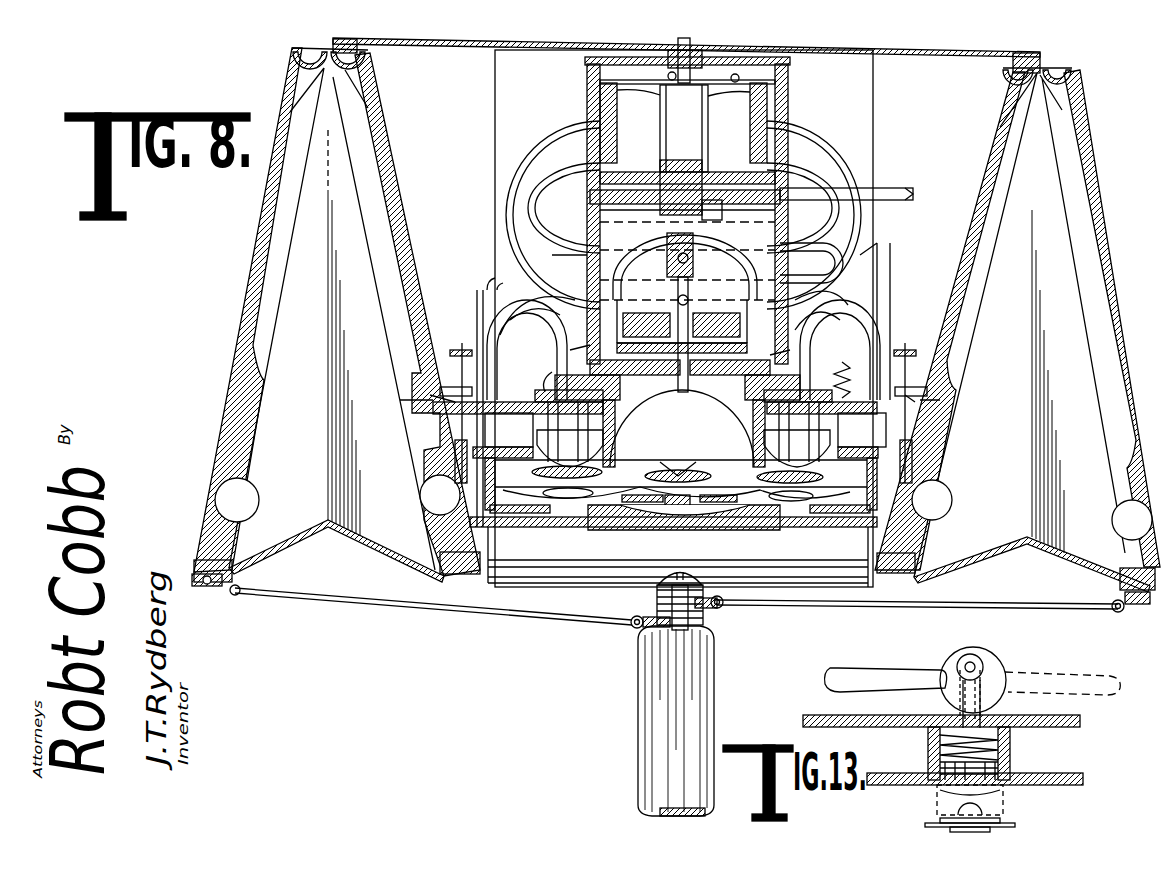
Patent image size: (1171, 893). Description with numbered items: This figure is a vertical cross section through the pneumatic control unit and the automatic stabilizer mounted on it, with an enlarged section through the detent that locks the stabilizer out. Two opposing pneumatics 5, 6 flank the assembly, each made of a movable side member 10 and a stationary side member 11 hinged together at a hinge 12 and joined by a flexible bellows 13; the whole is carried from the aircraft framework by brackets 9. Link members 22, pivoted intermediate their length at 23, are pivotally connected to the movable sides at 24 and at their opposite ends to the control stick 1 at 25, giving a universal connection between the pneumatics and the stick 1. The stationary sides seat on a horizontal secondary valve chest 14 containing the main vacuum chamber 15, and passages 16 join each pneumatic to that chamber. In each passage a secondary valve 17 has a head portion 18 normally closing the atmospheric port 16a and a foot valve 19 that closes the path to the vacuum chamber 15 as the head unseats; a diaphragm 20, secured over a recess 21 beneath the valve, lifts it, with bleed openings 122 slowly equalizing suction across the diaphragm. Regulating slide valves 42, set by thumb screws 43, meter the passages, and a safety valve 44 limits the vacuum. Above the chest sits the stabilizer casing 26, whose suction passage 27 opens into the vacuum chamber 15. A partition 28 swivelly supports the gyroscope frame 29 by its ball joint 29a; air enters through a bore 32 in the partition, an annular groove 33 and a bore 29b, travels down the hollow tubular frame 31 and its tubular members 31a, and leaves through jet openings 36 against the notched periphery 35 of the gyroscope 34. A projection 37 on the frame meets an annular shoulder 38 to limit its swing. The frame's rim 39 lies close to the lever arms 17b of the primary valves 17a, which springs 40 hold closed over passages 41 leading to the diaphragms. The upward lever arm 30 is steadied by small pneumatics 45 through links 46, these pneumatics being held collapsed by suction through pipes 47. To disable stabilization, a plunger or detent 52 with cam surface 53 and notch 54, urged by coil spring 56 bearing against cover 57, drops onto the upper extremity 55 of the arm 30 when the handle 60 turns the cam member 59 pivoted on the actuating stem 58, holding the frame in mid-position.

In FIG. 8, the control member or stick 1 is at (700, 735).
In FIG. 8, the pneumatic 5 is at (305, 242).
In FIG. 8, the pneumatic 6 is at (1090, 268).
In FIG. 8, the standards or brackets 9 is at (710, 350).
In FIG. 8, the hinged side member 10 is at (245, 418).
In FIG. 8, the hinged side member 11 is at (420, 405).
In FIG. 8, the hinge 12 is at (340, 88).
In FIG. 8, the flexible covering or bellows 13 is at (674, 548).
In FIG. 8, the secondary valve chest 14 is at (527, 350).
In FIG. 8, the central or main vacuum chamber 15 is at (684, 433).
In FIG. 8, the passage 16 is at (659, 430).
In FIG. 8, the port 16a is at (560, 390).
In FIG. 8, the secondary pneumatic control valve 17 is at (600, 436).
In FIG. 8, the primary control valve 17a is at (812, 232).
In FIG. 8, the operating lever arm 17b is at (677, 345).
In FIG. 8, the head portion 18 is at (580, 390).
In FIG. 8, the foot valve 19 is at (602, 472).
In FIG. 8, the valve actuated diaphragm or pouch 20 is at (570, 505).
In FIG. 8, the recess or depression 21 is at (527, 512).
In FIG. 8, the link member 22 is at (458, 612).
In FIG. 8, the pivot 23 is at (238, 597).
In FIG. 8, the pivotal connection 24 is at (208, 592).
In FIG. 8, the pivotal connection 25 is at (657, 590).
In FIG. 8, the automatic stabilizer casing 26 is at (587, 80).
In FIG. 13, the automatic stabilizer casing 26 is at (1078, 778).
In FIG. 8, the air inlet or suction passage 27 is at (680, 395).
In FIG. 8, the partition member 28 is at (590, 196).
In FIG. 8, the gyroscope supporting frame or pendulum 29 is at (660, 222).
In FIG. 8, the ball joint portion 29a is at (665, 170).
In FIG. 8, the communicating passage or bore 29b is at (702, 214).
In FIG. 8, the upwardly extending lever arm 30 is at (660, 132).
In FIG. 13, the upwardly extending lever arm 30 is at (925, 824).
In FIG. 8, the skeleton or hollow tubular frame 31 is at (693, 255).
In FIG. 8, the tubular member 31a is at (740, 250).
In FIG. 8, the air inlet passage or bore 32 is at (770, 185).
In FIG. 8, the annular recess or groove 33 is at (677, 384).
In FIG. 8, the air jet-operated gyroscope 34 is at (682, 319).
In FIG. 8, the notched periphery 35 is at (682, 314).
In FIG. 8, the air jet opening 36 is at (682, 306).
In FIG. 8, the projection 37 is at (660, 352).
In FIG. 8, the annular shoulder 38 is at (700, 356).
In FIG. 8, the rim 39 is at (705, 172).
In FIG. 8, the valve seating spring 40 is at (670, 307).
In FIG. 8, the passage 41 is at (503, 225).
In FIG. 8, the regulating slide valve 42 is at (455, 425).
In FIG. 8, the thumb screw 43 is at (680, 406).
In FIG. 8, the safety valve 44 is at (487, 278).
In FIG. 8, the small pneumatic 45 is at (600, 108).
In FIG. 8, the link member 46 is at (655, 92).
In FIG. 8, the communicating passage or pipe 47 is at (535, 140).
In FIG. 8, the plunger or detent 52 is at (668, 68).
In FIG. 13, the plunger or detent 52 is at (1012, 760).
In FIG. 8, the annular cam surface 53 is at (690, 72).
In FIG. 13, the annular cam surface 53 is at (1005, 793).
In FIG. 8, the central notch or recess 54 is at (738, 80).
In FIG. 13, the central notch or recess 54 is at (940, 805).
In FIG. 8, the upper extremity 55 is at (672, 110).
In FIG. 13, the upper extremity 55 is at (995, 808).
In FIG. 8, the coil spring 56 is at (575, 48).
In FIG. 8, the cover 57 is at (472, 45).
In FIG. 13, the cover 57 is at (910, 728).
In FIG. 8, the actuating stem 58 is at (780, 62).
In FIG. 13, the actuating stem 58 is at (1000, 705).
In FIG. 13, the actuating cam member 59 is at (998, 675).
In FIG. 13, the handle 60 is at (912, 684).
In FIG. 8, the bleed openings or vents 122 is at (660, 525).